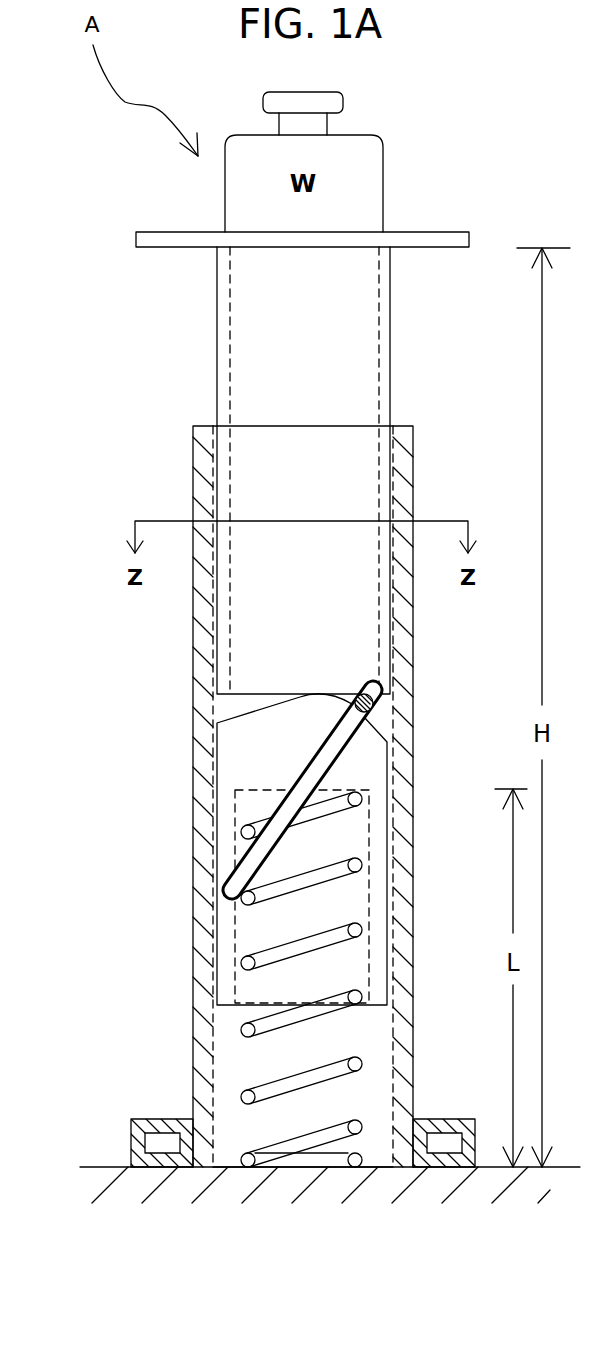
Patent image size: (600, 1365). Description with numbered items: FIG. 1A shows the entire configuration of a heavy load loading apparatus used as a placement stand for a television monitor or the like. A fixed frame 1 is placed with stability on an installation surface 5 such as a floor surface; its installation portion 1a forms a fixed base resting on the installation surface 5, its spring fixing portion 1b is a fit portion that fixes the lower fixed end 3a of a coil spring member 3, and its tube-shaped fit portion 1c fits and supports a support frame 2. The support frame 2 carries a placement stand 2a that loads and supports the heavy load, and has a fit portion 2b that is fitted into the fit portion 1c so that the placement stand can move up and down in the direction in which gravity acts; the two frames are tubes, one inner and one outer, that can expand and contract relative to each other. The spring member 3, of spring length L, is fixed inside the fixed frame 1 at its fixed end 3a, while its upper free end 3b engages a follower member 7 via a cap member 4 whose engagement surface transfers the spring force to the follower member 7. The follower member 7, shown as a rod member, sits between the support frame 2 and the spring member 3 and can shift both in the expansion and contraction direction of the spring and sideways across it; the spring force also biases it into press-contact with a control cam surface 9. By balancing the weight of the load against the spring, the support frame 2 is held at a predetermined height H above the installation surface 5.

The fixed frame 1 is at (170, 697).
The installation portion 1a is at (160, 1120).
The spring fixing portion 1b is at (373, 1160).
The support frame fit portion 1c is at (216, 1030).
The support frame 2 is at (392, 340).
The placement stand 2a is at (430, 232).
The fit portion 2b is at (360, 572).
The spring member 3 is at (312, 1018).
The fixed end 3a is at (317, 1162).
The free end 3b is at (310, 822).
The cap member 4 is at (220, 932).
The installation surface 5 is at (105, 1167).
The follower member 7 is at (378, 712).
The cam surface 9 is at (333, 748).